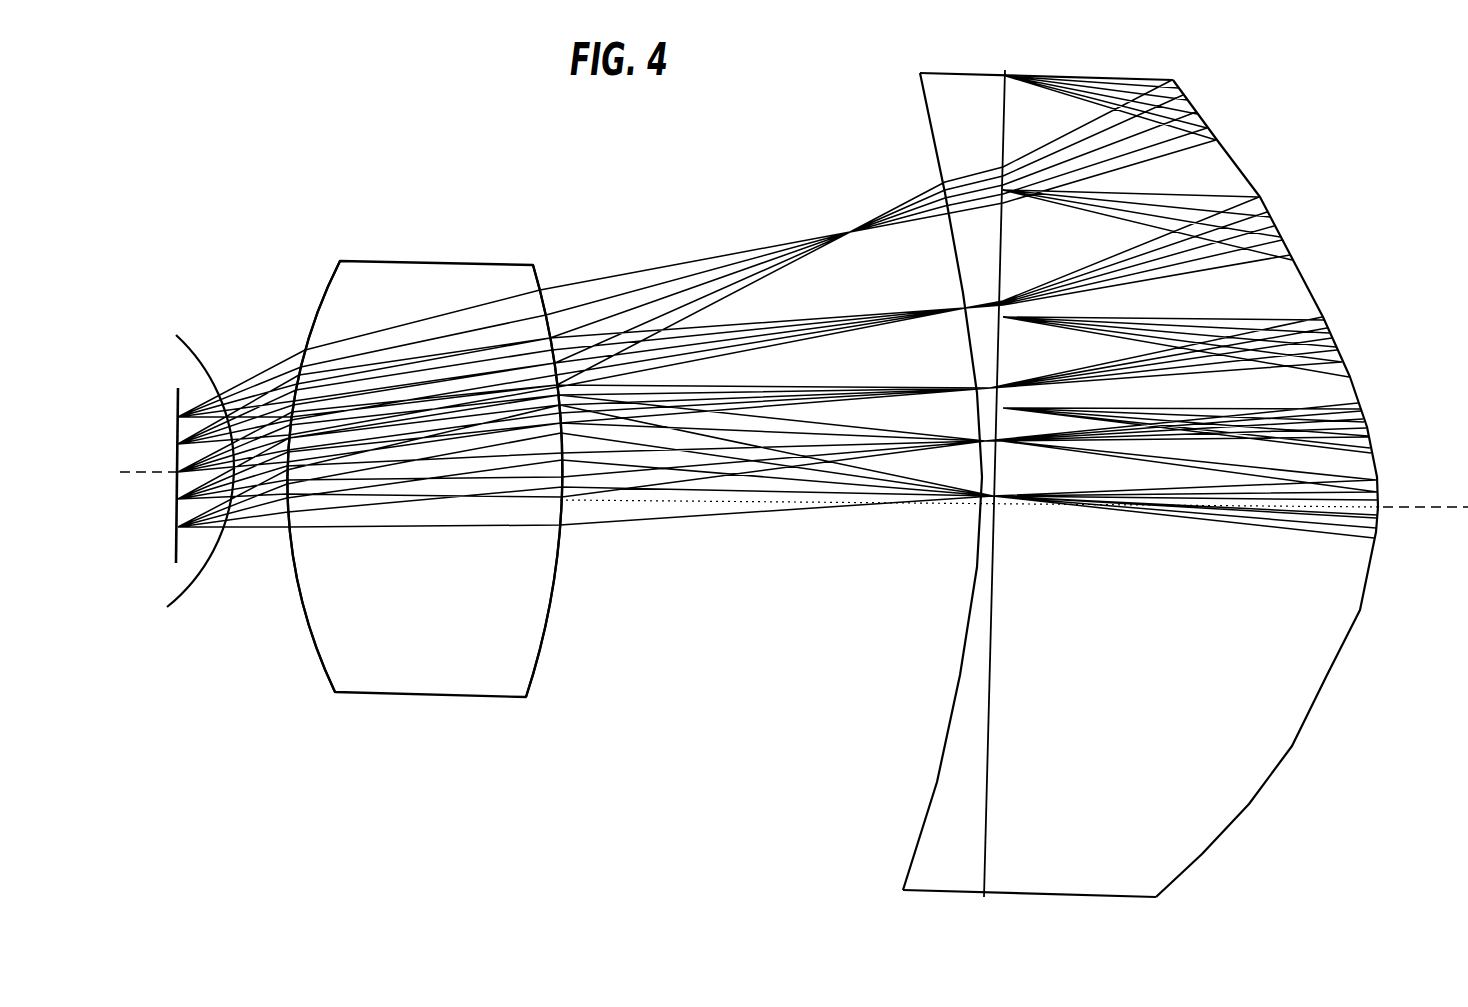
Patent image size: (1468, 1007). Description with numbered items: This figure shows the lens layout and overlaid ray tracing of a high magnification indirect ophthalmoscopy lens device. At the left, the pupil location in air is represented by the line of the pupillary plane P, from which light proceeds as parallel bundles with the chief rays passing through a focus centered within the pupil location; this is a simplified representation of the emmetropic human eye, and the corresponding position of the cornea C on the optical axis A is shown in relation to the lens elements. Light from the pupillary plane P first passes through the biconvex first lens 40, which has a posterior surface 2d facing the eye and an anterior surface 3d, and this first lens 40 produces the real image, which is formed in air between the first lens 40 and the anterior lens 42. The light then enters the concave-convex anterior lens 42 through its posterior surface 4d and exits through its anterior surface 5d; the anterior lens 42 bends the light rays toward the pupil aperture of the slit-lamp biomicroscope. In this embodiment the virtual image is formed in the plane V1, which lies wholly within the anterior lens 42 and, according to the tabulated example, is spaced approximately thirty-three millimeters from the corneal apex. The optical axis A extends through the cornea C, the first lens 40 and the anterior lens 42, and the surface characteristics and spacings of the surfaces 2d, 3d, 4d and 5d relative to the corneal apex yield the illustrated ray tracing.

The pupillary plane P is at (177, 396).
The cornea C is at (199, 345).
The biconvex first lens 40 is at (438, 483).
The posterior surface 2d is at (306, 621).
The anterior surface 3d is at (553, 611).
The anterior lens 42 is at (1131, 483).
The posterior surface 4d is at (943, 746).
The anterior surface 5d is at (1288, 747).
The virtual image plane V1 is at (980, 483).
The optical axis A is at (1412, 504).